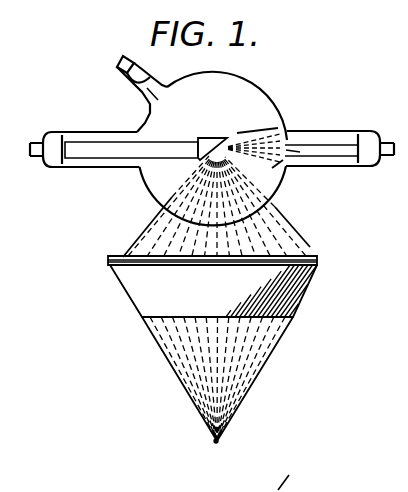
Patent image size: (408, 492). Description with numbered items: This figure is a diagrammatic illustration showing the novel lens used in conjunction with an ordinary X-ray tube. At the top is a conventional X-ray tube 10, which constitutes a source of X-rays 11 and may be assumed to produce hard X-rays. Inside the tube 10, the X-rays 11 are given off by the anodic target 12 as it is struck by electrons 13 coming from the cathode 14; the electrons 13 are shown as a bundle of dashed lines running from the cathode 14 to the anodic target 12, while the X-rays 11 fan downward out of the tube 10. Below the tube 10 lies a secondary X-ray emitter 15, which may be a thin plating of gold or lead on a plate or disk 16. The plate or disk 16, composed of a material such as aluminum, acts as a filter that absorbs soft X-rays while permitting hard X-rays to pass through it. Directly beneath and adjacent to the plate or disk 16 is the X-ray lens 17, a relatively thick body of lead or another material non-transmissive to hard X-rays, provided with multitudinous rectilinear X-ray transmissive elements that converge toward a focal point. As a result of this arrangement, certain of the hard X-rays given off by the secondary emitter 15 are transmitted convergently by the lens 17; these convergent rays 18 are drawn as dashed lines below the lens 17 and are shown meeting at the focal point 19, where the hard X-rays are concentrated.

The X-ray tube 10 is at (325, 90).
The X-rays 11 is at (293, 225).
The anodic target 12 is at (204, 139).
The electrons 13 is at (262, 129).
The cathode 14 is at (295, 153).
The secondary X-ray emitter 15 is at (118, 256).
The plate or disk 16 is at (108, 261).
The X-ray lens 17 is at (140, 300).
The convergent hard X-rays 18 is at (289, 345).
The focal point 19 is at (213, 443).